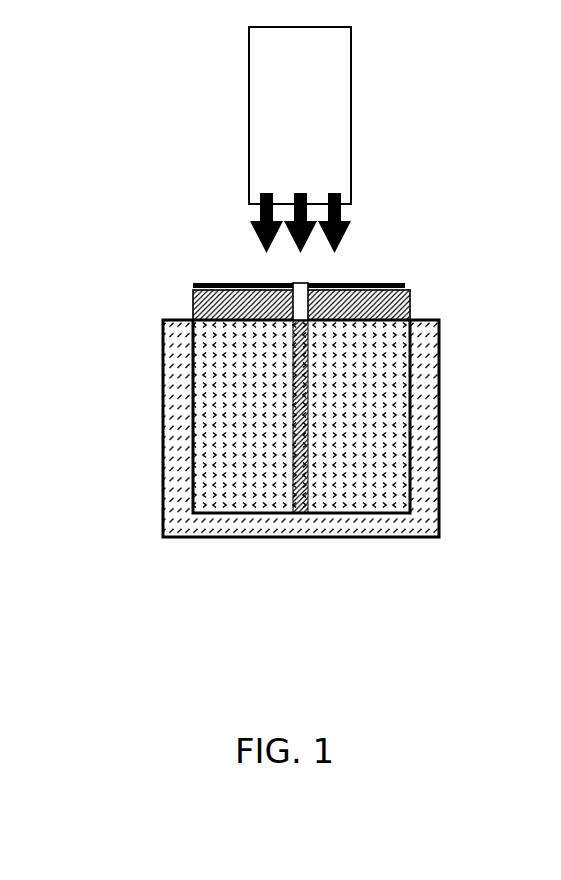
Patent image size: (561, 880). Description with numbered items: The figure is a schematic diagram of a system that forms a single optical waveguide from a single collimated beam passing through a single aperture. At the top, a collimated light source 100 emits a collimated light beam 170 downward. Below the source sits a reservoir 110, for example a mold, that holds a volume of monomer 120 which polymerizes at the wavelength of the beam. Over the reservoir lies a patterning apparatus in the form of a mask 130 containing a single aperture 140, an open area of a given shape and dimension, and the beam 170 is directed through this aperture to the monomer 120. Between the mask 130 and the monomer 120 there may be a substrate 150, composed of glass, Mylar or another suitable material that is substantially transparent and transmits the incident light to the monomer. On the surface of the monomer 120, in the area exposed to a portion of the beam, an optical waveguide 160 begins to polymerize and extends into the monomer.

The collimated light source 100 is at (351, 67).
The collimated light beam 170 is at (347, 224).
The mask 130 is at (193, 282).
The aperture 140 is at (303, 281).
The substrate 150 is at (410, 302).
The monomer 120 is at (237, 355).
The optical waveguide 160 is at (306, 393).
The reservoir 110 is at (177, 497).